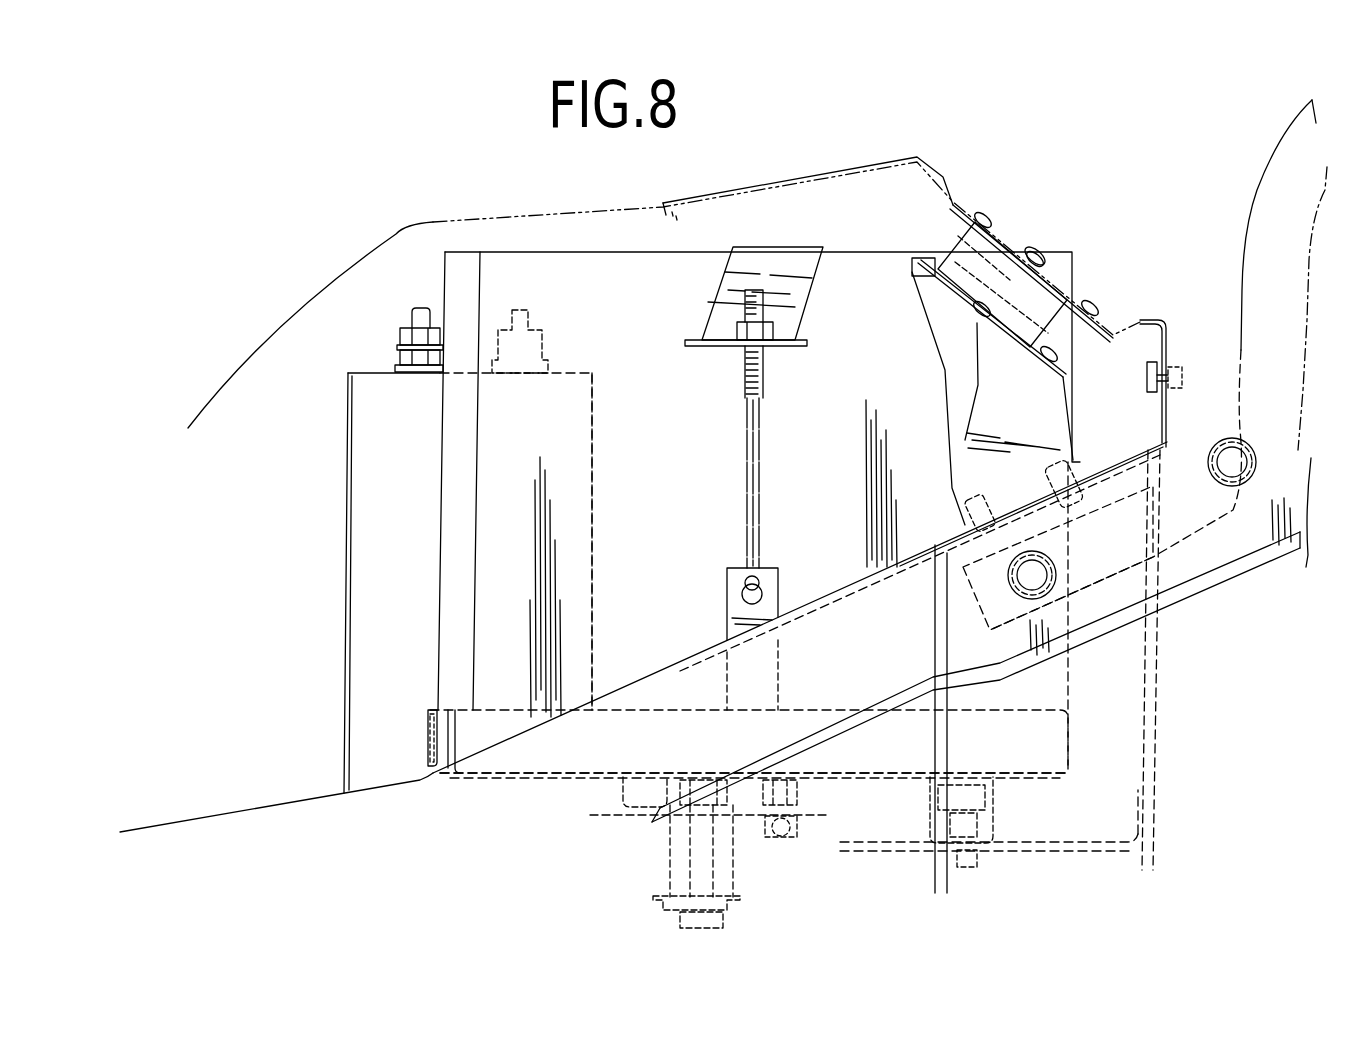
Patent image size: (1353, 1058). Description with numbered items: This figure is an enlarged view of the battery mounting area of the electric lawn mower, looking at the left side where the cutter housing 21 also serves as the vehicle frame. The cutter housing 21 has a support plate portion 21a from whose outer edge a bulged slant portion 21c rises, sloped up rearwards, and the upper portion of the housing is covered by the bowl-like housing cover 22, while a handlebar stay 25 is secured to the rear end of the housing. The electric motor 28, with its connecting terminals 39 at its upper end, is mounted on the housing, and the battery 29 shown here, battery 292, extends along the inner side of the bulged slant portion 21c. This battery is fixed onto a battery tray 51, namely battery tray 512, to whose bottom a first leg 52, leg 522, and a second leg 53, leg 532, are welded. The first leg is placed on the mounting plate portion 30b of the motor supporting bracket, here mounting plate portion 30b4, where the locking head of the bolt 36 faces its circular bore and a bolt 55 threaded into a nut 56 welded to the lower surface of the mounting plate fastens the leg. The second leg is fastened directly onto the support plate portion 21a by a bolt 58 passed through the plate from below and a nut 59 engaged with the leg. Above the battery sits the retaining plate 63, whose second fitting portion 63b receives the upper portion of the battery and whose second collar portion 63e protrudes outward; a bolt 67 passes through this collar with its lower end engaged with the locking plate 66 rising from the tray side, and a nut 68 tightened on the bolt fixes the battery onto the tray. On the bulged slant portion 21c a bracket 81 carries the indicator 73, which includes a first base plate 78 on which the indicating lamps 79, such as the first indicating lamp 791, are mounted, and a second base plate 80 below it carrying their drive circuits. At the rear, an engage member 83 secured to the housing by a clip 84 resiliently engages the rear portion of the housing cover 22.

The cutter housing 21 is at (268, 792).
The support plate portion 21a is at (1053, 842).
The bulged slant portion 21c is at (840, 583).
The housing cover 22 is at (284, 326).
The handlebar stay 25 is at (1267, 222).
The electric motor 28 is at (425, 551).
The battery 29 is at (692, 517).
The battery 292 is at (650, 541).
The mounting plate portion 30b is at (833, 813).
The mounting plate portion 30b4 is at (913, 811).
The bolt 36 is at (690, 778).
The connecting terminal 39 is at (418, 318).
The battery tray 51 is at (445, 738).
The battery tray 512 is at (415, 721).
The first leg 52 is at (650, 780).
The first leg 522 is at (754, 848).
The second leg 53 is at (993, 805).
The second leg 532 is at (989, 820).
The bolt 55 is at (812, 720).
The nut 56 is at (792, 830).
The bolt 58 is at (960, 870).
The nut 59 is at (973, 825).
The retaining plate 63 is at (720, 284).
The second fitting portion 63b is at (712, 311).
The second collar portion 63e is at (790, 346).
The locking plate 66 is at (733, 592).
The bolt 67 is at (748, 428).
The nut 68 is at (772, 326).
The indicator 73 is at (998, 222).
The first base plate 78 is at (1070, 300).
The indicating lamp 79 is at (1040, 252).
The first indicating lamp 791 is at (1071, 214).
The second base plate 80 is at (993, 317).
The bracket 81 is at (1003, 393).
The engage member 83 is at (1158, 325).
The clip 84 is at (1147, 375).